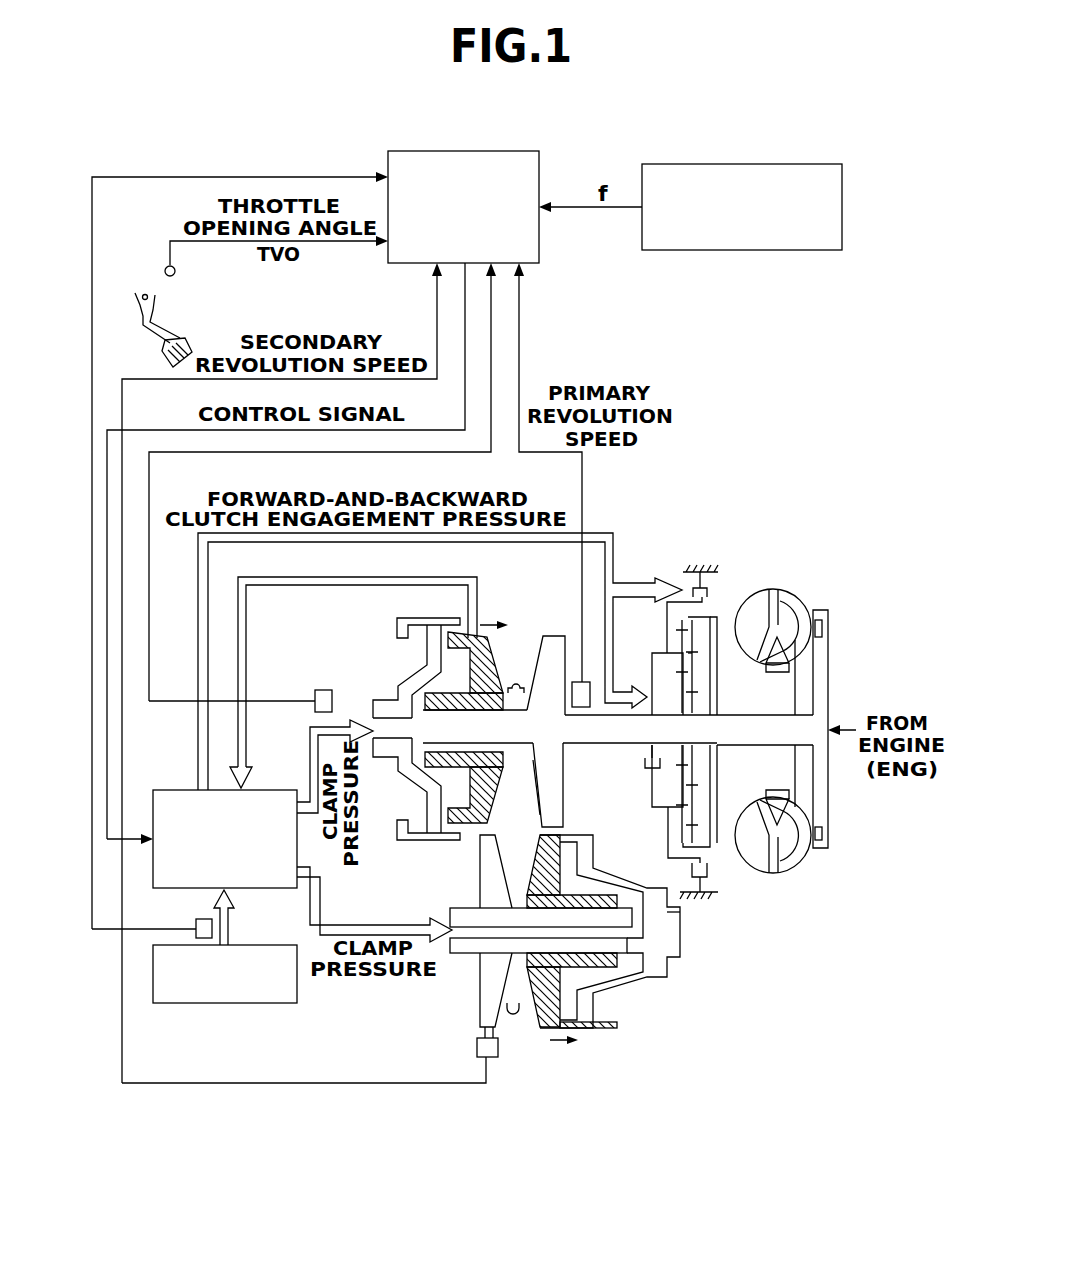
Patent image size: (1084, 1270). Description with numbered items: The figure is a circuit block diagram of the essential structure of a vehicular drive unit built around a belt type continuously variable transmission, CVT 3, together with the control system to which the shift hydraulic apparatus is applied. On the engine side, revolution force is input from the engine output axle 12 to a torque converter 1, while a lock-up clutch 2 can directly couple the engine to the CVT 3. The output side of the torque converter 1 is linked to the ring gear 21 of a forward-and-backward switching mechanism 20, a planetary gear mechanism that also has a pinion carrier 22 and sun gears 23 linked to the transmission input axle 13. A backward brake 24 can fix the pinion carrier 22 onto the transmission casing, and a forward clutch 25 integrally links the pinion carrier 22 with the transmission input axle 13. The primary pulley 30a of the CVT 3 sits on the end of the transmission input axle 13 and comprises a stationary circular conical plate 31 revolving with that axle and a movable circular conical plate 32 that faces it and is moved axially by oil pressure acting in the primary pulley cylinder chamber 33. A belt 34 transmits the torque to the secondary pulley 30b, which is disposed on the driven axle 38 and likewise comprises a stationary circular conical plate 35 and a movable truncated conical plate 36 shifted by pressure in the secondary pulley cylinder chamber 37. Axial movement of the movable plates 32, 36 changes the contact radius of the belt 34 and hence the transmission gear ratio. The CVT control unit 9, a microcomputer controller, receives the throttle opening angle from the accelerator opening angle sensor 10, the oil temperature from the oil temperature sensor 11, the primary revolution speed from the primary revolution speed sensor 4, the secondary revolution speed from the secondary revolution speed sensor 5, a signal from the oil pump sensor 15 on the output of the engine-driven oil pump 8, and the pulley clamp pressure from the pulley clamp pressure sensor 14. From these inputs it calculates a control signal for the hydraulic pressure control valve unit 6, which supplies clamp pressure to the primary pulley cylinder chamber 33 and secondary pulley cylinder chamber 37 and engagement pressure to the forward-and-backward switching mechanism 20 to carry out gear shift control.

The torque converter 1 is at (790, 590).
The lock-up clutch 2 is at (820, 800).
The belt type continuously variable transmission (CVT) 3 is at (542, 866).
The primary revolution speed sensor 4 is at (582, 682).
The secondary revolution speed sensor 5 is at (495, 1058).
The hydraulic pressure control valve unit 6 is at (168, 790).
The oil pump 8 is at (255, 1003).
The CVT control unit 9 is at (463, 151).
The accelerator opening angle sensor 10 is at (165, 268).
The oil temperature sensor 11 is at (784, 164).
The engine output axle 12 is at (730, 745).
The transmission input axle 13 is at (605, 745).
The pulley clamp pressure sensor 14 is at (318, 712).
The oil pump sensor 15 is at (196, 925).
The forward-and-backward switching mechanism 20 is at (712, 741).
The ring gear 21 is at (695, 620).
The pinion carrier 22 is at (652, 680).
The sun gears 23 is at (693, 673).
The backward brake 24 is at (690, 588).
The forward clutch 25 is at (650, 772).
The primary pulley 30a is at (522, 740).
The secondary pulley 30b is at (578, 964).
The stationary circular conical plate 31 is at (548, 634).
The movable circular conical plate 32 is at (500, 672).
The primary pulley cylinder chamber 33 is at (452, 667).
The belt 34 is at (525, 817).
The stationary circular conical plate 35 is at (490, 880).
The movable truncated conical plate 36 is at (603, 1030).
The secondary pulley cylinder chamber 37 is at (626, 970).
The driven axle 38 is at (680, 930).